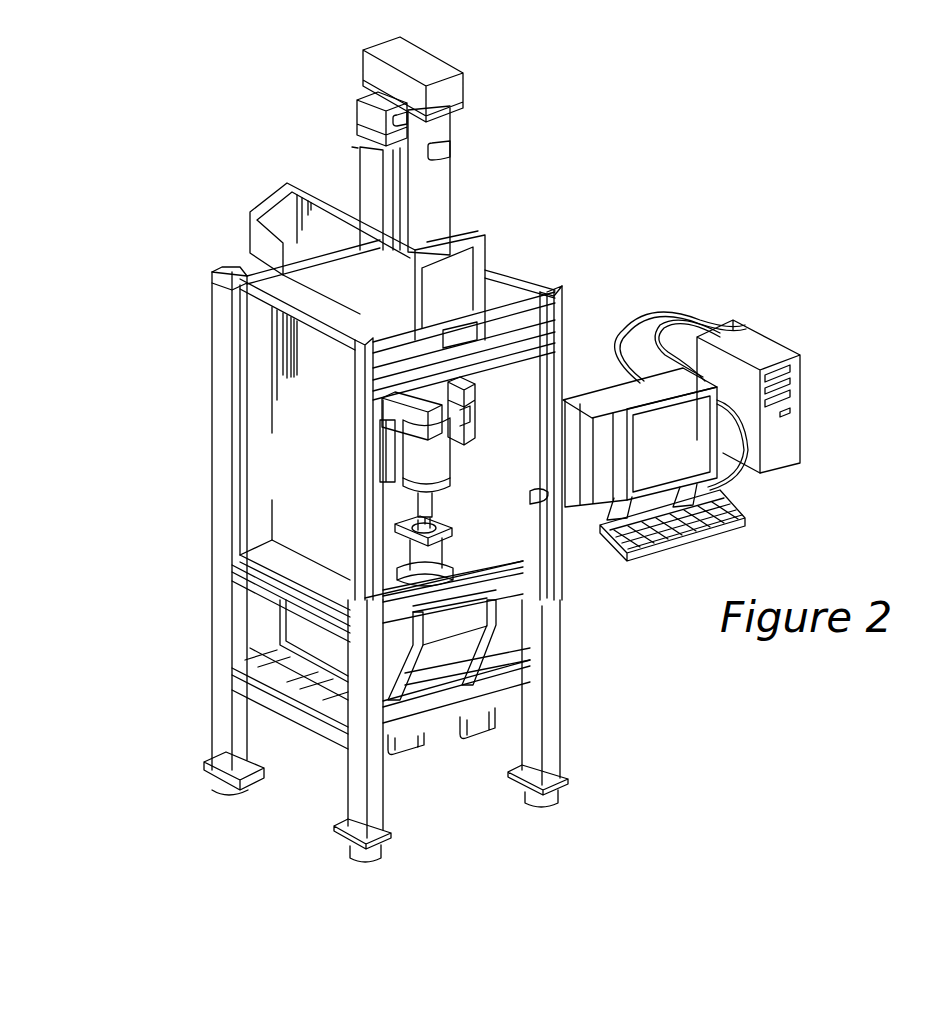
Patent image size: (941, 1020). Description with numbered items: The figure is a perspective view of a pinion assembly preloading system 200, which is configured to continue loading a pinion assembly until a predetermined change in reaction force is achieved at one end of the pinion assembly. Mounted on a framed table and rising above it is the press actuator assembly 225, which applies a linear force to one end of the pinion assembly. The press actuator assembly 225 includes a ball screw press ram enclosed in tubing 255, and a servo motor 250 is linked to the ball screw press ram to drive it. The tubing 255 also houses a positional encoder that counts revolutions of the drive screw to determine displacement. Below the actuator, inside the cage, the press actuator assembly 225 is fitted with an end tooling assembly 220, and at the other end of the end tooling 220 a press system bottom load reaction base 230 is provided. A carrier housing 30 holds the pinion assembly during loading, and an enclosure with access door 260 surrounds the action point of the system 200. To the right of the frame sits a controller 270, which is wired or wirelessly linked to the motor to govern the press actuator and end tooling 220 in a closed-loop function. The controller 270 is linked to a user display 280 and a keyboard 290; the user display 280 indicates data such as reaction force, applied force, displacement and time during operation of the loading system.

The pinion assembly preloading system 200 is at (182, 38).
The press actuator assembly 225 is at (580, 38).
The servo motor 250 is at (356, 148).
The tubing 255 is at (452, 188).
The end tooling assembly 220 is at (438, 446).
The press system bottom load reaction base 230 is at (462, 542).
The carrier housing 30 is at (440, 542).
The enclosure with access door 260 is at (527, 574).
The controller 270 is at (752, 335).
The user display 280 is at (690, 457).
The keyboard 290 is at (745, 505).